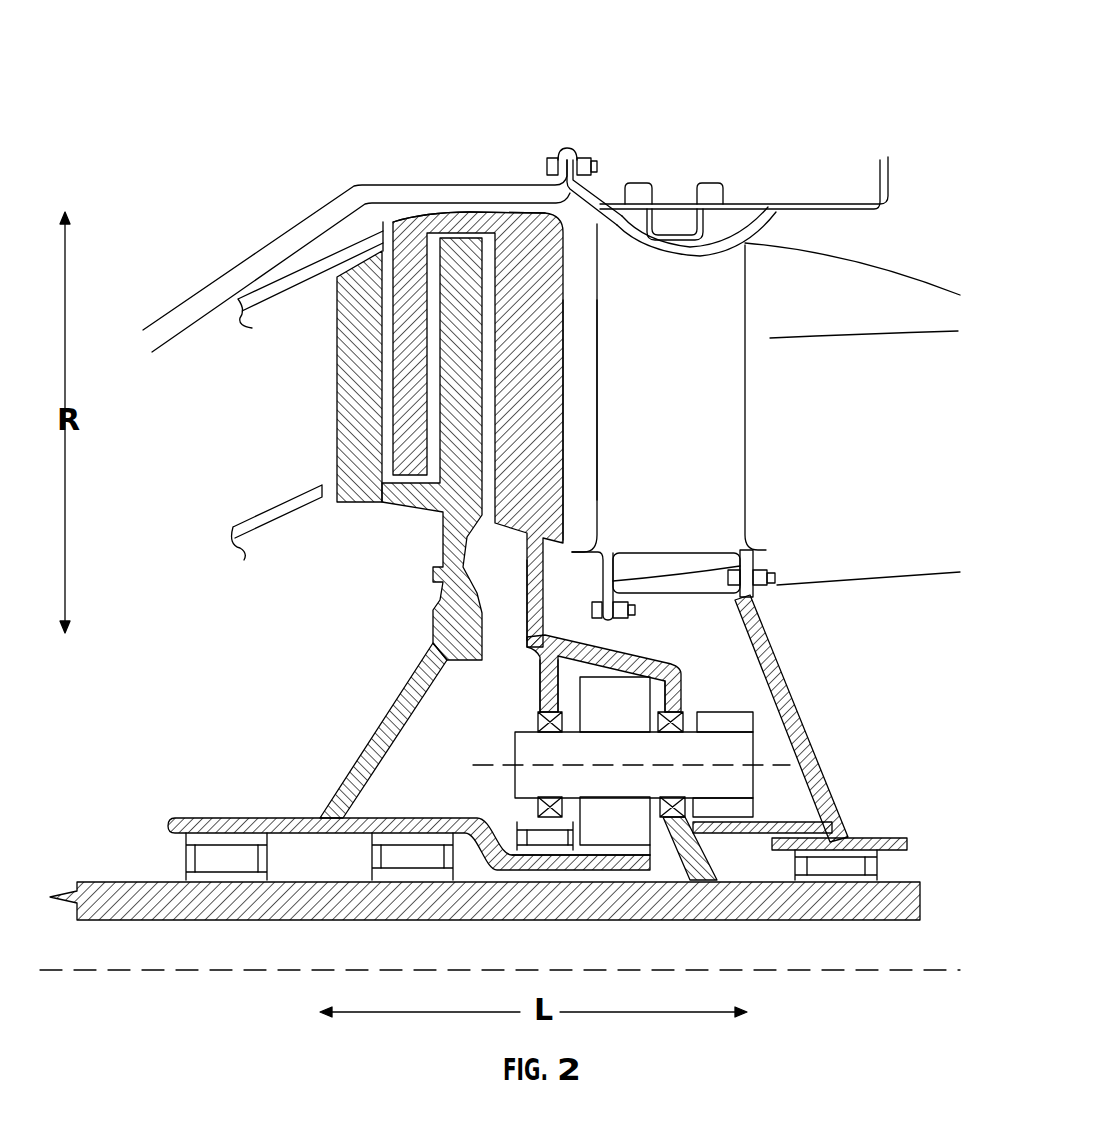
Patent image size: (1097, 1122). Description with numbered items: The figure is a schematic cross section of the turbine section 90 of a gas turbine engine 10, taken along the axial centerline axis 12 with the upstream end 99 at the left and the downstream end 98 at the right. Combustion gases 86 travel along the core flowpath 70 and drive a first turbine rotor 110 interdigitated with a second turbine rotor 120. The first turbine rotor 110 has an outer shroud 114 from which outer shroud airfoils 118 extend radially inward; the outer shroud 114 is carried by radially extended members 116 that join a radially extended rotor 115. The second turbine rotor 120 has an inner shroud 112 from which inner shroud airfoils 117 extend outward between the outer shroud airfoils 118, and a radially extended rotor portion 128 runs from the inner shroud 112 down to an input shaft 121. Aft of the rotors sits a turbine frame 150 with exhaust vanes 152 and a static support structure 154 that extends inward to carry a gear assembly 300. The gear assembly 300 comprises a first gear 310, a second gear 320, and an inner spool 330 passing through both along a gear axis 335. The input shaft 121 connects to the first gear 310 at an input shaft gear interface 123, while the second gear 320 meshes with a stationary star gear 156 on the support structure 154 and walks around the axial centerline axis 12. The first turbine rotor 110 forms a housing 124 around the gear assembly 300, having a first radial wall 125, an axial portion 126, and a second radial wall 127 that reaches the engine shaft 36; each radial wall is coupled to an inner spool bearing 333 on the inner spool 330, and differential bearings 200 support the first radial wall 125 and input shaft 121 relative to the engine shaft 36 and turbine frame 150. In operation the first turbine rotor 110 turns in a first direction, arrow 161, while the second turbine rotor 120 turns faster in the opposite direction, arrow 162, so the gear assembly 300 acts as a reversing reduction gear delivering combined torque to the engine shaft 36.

The gas turbine engine 10 is at (758, 80).
The axial centerline axis 12 is at (862, 971).
The engine shaft 36 is at (920, 897).
The core flowpath 70 is at (180, 434).
The combustion gases 86 is at (778, 474).
The turbine section 90 is at (353, 160).
The downstream end 98 is at (935, 697).
The upstream end 99 is at (122, 714).
The first turbine rotor 110 is at (566, 341).
The inner shroud 112 is at (387, 490).
The outer shroud 114 is at (422, 211).
The radially extended rotor 115 is at (531, 641).
The radially extended members 116 is at (566, 448).
The inner shroud airfoils 117 is at (345, 409).
The outer shroud airfoils 118 is at (392, 311).
The second turbine rotor 120 is at (452, 490).
The input shaft 121 is at (251, 806).
The input shaft gear interface 123 is at (616, 870).
The housing 124 is at (572, 624).
The first radial wall 125 is at (539, 709).
The axial portion 126 is at (621, 650).
The second radial wall 127 is at (681, 683).
The radially extended rotor portion 128 is at (398, 697).
The turbine frame 150 is at (712, 410).
The exhaust vanes 152 is at (726, 354).
The static support structure 154 is at (776, 655).
The stationary star gear 156 is at (752, 822).
The arrow 161 is at (176, 893).
The arrow 162 is at (312, 805).
The differential bearing 200 is at (188, 858).
The gear assembly 300 is at (668, 684).
The first gear 310 is at (686, 876).
The second gear 320 is at (738, 722).
The inner spool 330 is at (727, 748).
The inner spool bearing 333 is at (688, 708).
The gear axis 335 is at (473, 763).